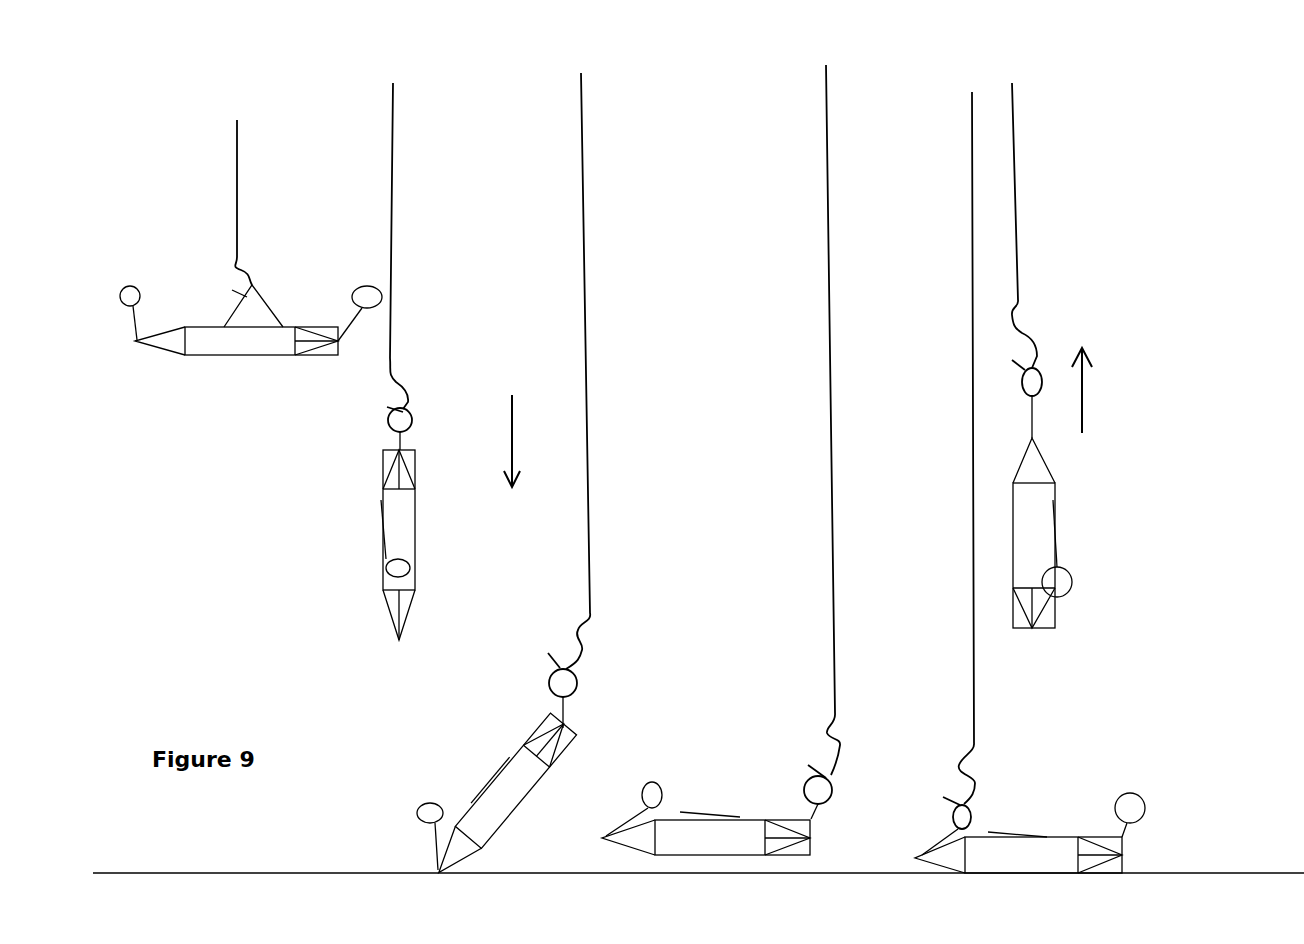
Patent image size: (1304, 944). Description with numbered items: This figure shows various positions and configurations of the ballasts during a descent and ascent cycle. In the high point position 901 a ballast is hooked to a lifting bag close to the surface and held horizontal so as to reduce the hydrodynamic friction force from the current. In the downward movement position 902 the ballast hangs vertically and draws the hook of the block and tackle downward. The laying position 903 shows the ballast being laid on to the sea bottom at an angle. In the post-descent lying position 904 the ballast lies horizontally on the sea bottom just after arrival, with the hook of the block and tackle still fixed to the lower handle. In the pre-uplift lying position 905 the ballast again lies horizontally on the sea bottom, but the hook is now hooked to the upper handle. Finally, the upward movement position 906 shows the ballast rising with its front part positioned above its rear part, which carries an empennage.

The high point position 901 is at (253, 360).
The downward movement position 902 is at (378, 558).
The laying position 903 is at (502, 772).
The post-descent lying position 904 is at (712, 824).
The pre-uplift lying position 905 is at (1045, 840).
The upward movement position 906 is at (1052, 500).